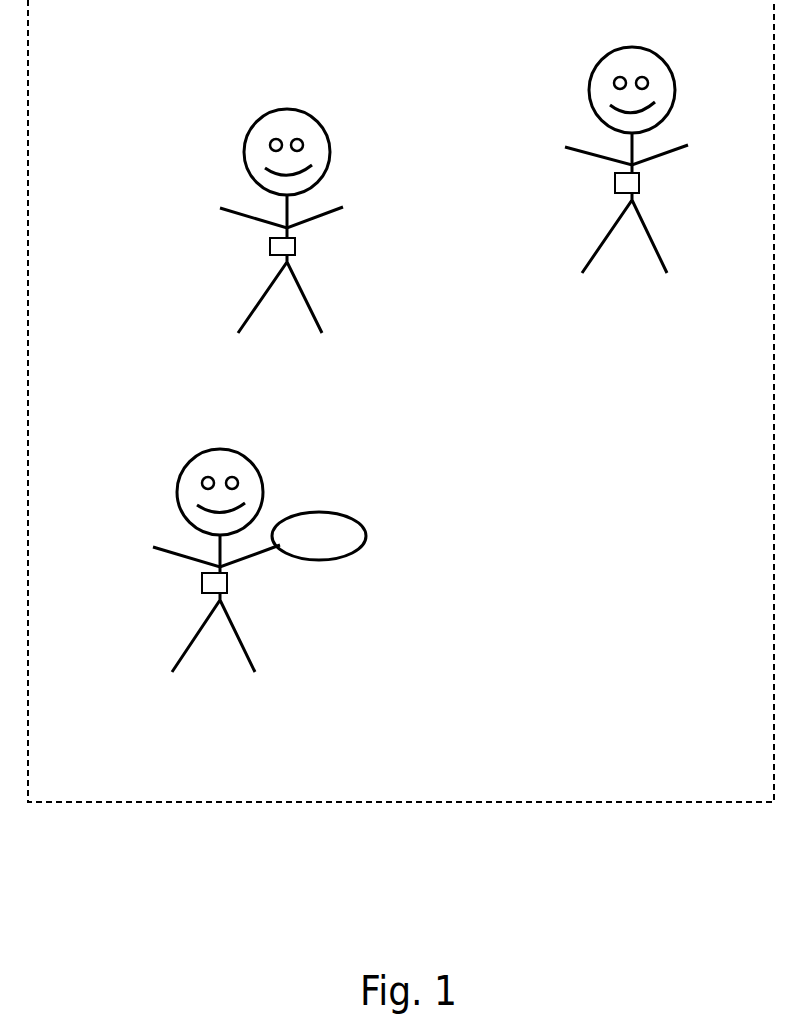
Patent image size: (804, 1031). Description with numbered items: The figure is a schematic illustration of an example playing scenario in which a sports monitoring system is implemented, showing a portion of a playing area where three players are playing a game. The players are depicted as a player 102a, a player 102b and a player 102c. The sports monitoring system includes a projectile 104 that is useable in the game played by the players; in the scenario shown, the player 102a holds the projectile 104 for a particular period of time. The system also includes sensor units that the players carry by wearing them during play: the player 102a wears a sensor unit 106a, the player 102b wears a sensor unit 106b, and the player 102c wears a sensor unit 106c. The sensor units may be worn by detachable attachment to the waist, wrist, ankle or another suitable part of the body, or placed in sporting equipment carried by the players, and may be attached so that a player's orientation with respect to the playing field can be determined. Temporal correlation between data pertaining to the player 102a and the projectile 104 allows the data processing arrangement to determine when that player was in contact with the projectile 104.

The player 102a is at (183, 473).
The player 102b is at (247, 142).
The player 102c is at (590, 77).
The projectile 104 is at (367, 542).
The sensor unit 106a is at (213, 588).
The sensor unit 106b is at (277, 257).
The sensor unit 106c is at (623, 193).